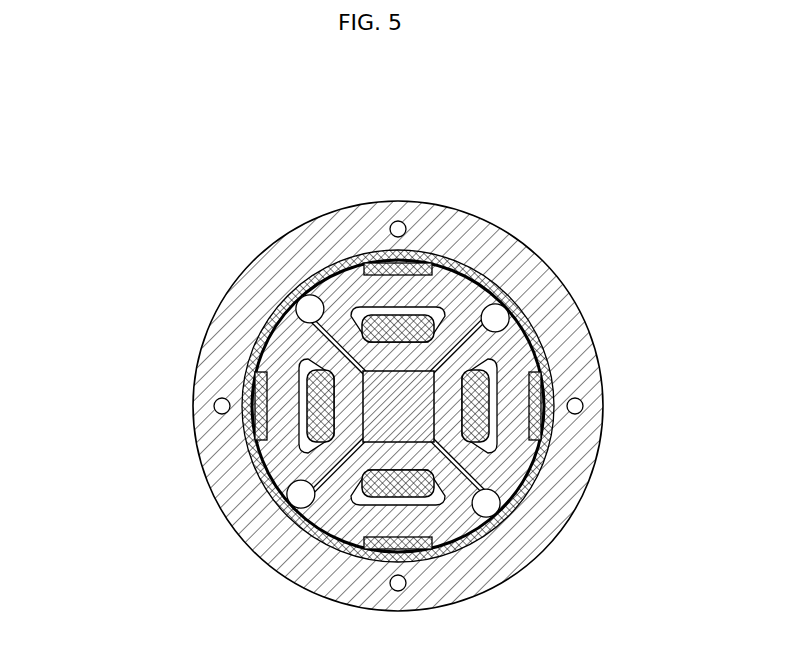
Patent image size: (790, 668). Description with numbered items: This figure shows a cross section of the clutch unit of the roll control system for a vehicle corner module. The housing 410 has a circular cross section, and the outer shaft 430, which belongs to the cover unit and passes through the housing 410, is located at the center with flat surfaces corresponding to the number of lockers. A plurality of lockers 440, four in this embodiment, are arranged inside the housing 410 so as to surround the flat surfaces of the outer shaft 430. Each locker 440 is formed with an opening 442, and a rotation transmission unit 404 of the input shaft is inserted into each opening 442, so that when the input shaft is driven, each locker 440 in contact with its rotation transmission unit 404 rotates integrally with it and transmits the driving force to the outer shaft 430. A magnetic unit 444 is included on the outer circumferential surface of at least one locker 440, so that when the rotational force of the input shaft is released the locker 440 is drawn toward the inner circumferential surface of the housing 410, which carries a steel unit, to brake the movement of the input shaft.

The housing 410 is at (543, 277).
The opening 442 is at (428, 263).
The locker 440 is at (282, 333).
The outer shaft 430 is at (423, 422).
The rotation transmission unit 404 is at (405, 307).
The magnetic unit 444 is at (385, 265).